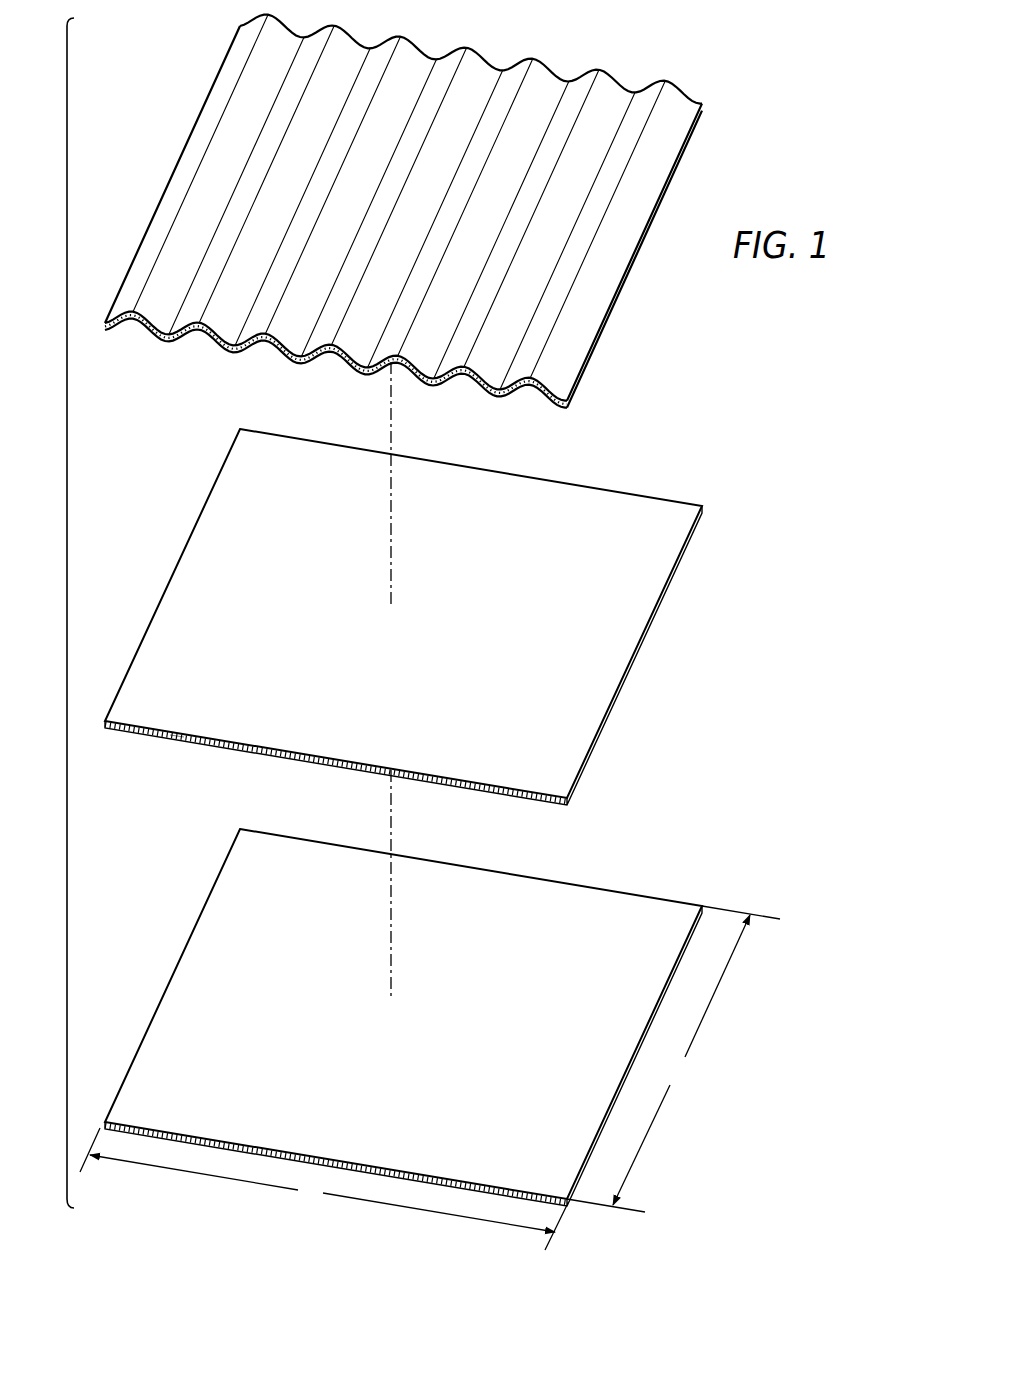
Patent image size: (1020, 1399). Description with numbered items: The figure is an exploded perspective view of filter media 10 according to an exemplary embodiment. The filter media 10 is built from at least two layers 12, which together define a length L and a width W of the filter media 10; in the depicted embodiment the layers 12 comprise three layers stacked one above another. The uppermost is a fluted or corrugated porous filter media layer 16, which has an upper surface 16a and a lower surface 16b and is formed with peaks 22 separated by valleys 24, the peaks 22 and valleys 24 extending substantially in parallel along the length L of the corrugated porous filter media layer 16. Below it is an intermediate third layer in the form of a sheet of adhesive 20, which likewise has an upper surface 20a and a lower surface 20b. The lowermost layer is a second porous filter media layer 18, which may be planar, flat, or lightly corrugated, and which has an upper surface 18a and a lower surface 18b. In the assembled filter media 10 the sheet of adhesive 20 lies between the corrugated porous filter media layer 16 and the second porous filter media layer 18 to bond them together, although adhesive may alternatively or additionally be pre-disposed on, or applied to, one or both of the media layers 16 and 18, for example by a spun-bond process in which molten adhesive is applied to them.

The filter media 10 is at (67, 598).
The layers 12 is at (688, 876).
The corrugated porous filter media layer 16 is at (613, 62).
The upper surface 16a is at (184, 187).
The lower surface 16b is at (133, 332).
The second porous filter media layer 18 is at (596, 876).
The upper surface 18a is at (207, 943).
The lower surface 18b is at (186, 1149).
The sheet of adhesive 20 is at (596, 476).
The upper surface 20a is at (208, 536).
The lower surface 20b is at (177, 749).
The peaks 22 is at (534, 377).
The valleys 24 is at (497, 398).
The width W is at (673, 1059).
The length L is at (323, 1189).